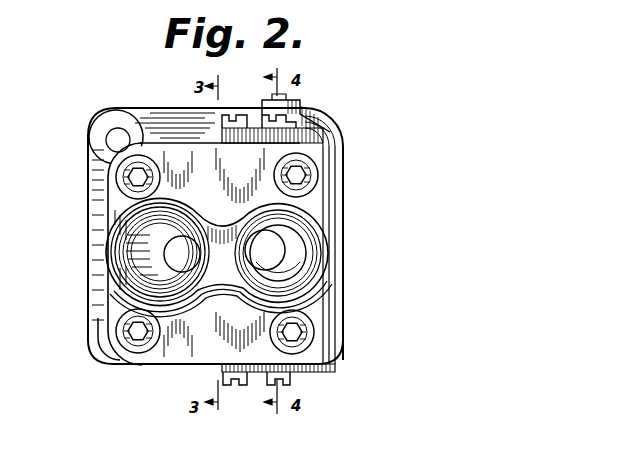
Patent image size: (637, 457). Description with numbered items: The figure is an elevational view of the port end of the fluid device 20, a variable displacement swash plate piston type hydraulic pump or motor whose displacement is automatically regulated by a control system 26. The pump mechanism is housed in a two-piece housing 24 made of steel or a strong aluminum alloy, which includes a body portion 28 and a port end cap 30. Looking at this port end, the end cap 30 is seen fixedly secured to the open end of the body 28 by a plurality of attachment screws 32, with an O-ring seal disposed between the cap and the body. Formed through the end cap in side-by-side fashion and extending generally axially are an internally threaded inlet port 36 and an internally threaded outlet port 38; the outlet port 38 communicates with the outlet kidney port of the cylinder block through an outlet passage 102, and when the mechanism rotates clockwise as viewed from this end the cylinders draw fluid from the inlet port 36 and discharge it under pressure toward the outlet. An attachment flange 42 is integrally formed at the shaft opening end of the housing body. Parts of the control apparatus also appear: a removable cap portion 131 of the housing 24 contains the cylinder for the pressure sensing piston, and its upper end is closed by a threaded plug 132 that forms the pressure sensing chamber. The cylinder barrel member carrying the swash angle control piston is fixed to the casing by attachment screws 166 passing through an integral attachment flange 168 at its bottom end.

The fluid device 20 is at (125, 369).
The housing 24 is at (327, 190).
The control system 26 is at (334, 130).
The body portion 28 is at (330, 253).
The port end cap 30 is at (312, 207).
The attachment screws 32 is at (122, 175).
The inlet port 36 is at (176, 248).
The outlet port 38 is at (273, 246).
The attachment flange 42 is at (170, 114).
The outlet passage 102 is at (258, 268).
The cap portion 131 is at (251, 128).
The threaded plug 132 is at (291, 97).
The attachment screws 166 is at (268, 388).
The attachment flange 168 is at (332, 368).